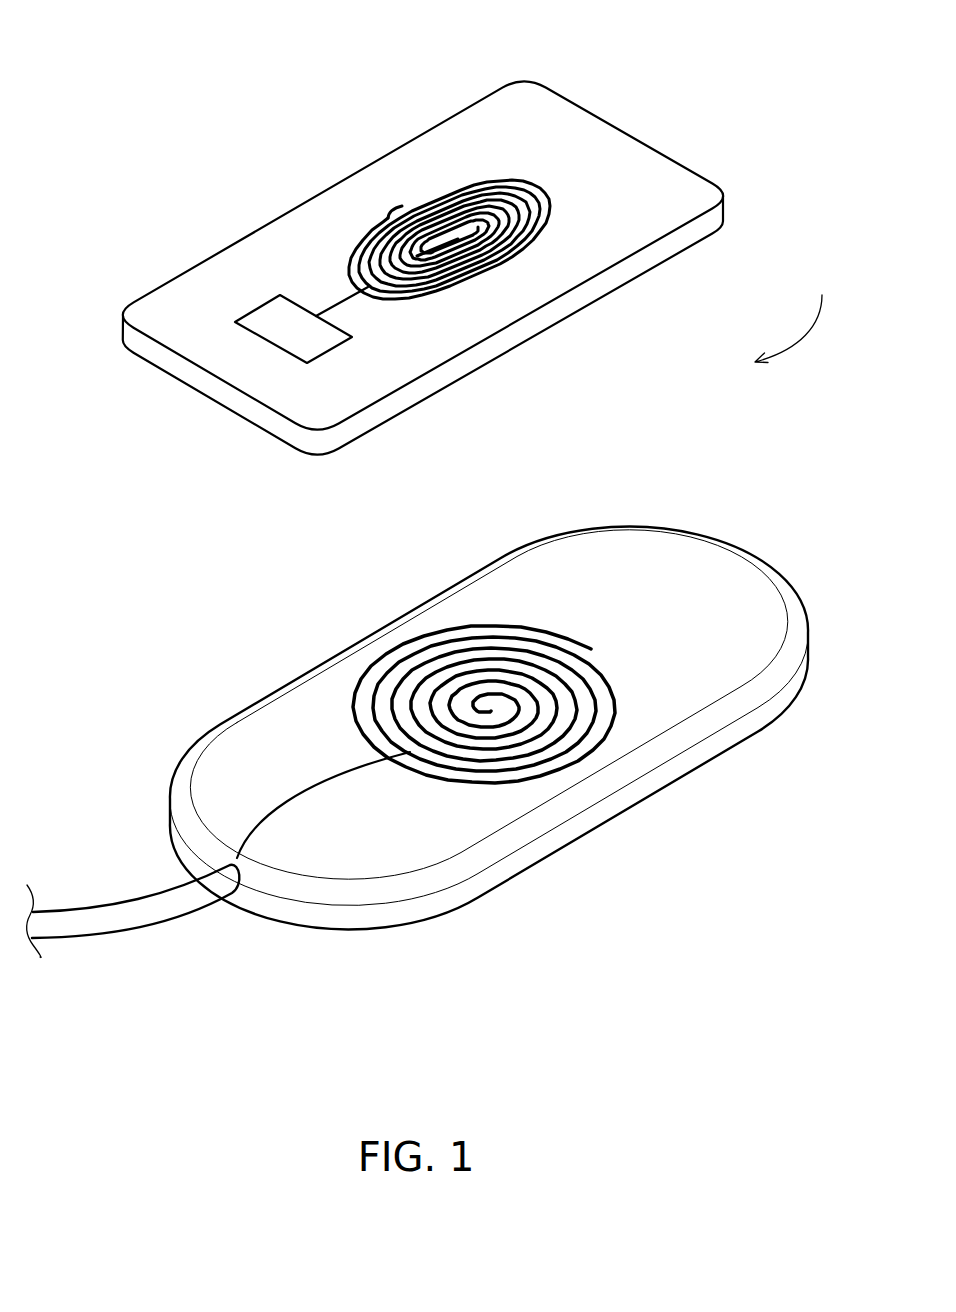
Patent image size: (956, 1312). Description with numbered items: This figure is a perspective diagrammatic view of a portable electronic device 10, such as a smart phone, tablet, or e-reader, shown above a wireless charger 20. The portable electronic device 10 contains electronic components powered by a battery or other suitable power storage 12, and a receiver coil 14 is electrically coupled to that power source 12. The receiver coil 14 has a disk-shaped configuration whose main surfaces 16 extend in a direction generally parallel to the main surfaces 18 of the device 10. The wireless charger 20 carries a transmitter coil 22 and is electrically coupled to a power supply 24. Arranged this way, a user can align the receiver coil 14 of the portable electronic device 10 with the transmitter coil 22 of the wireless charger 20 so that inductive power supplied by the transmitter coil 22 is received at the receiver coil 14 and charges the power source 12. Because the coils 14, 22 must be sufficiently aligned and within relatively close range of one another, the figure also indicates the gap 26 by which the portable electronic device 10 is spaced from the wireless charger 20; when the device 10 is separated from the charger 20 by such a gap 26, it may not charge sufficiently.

The portable electronic device 10 is at (525, 82).
The power storage 12 is at (270, 315).
The receiver coil 14 is at (447, 177).
The main surfaces 16 is at (387, 217).
The main surfaces 18 is at (627, 167).
The wireless charger 20 is at (718, 550).
The transmitter coil 22 is at (592, 752).
The power supply 24 is at (68, 964).
The gap 26 is at (801, 312).